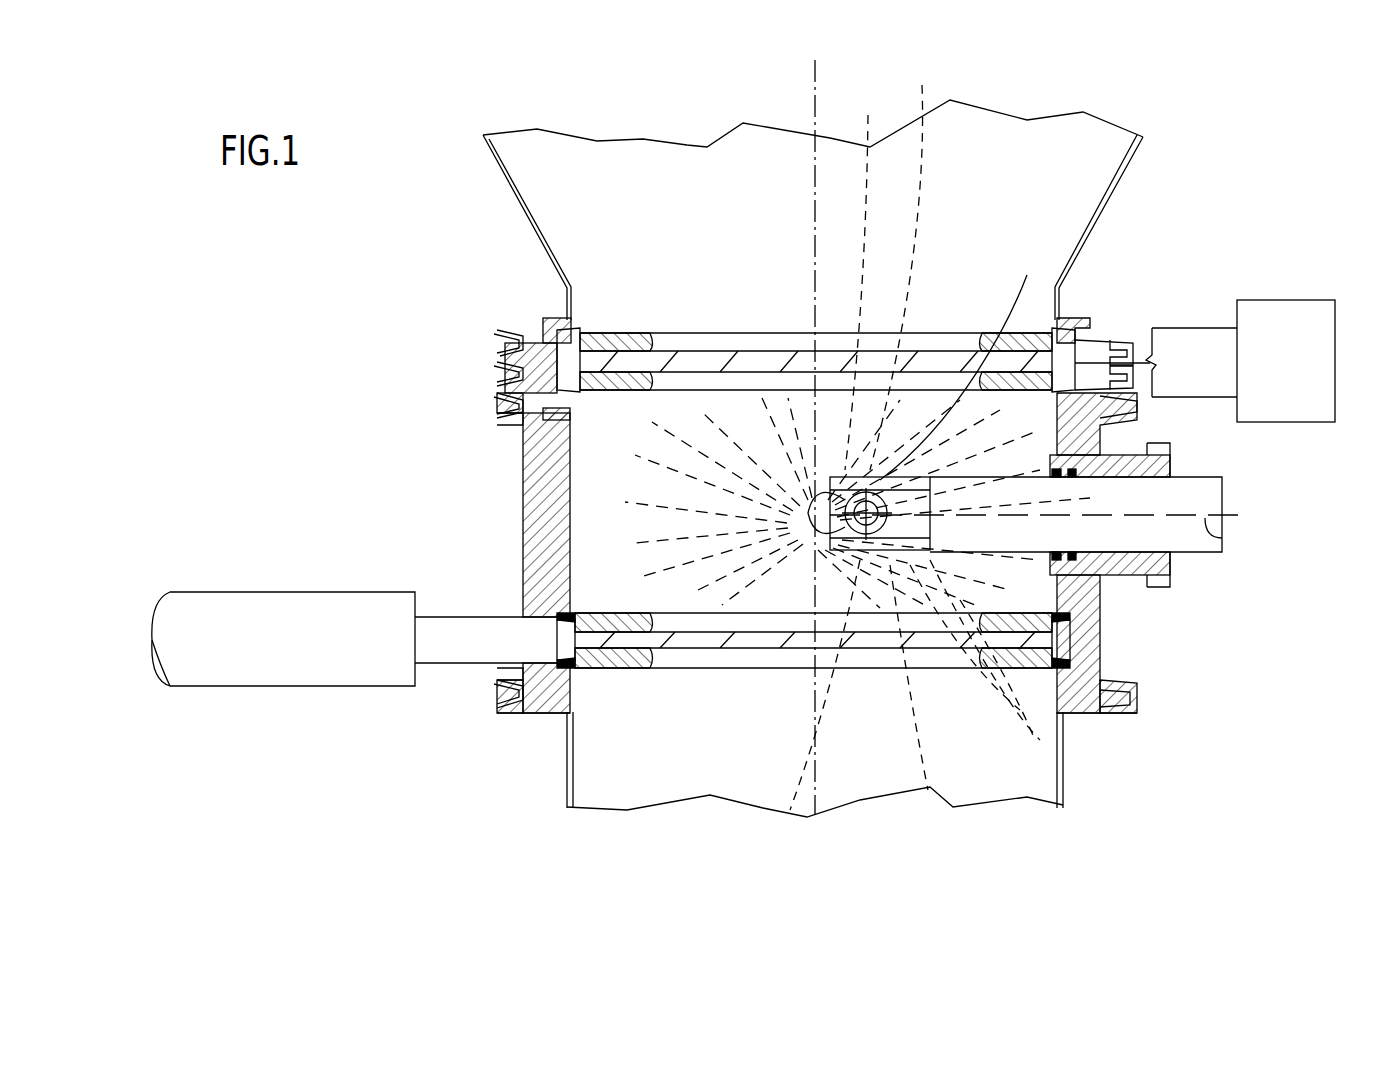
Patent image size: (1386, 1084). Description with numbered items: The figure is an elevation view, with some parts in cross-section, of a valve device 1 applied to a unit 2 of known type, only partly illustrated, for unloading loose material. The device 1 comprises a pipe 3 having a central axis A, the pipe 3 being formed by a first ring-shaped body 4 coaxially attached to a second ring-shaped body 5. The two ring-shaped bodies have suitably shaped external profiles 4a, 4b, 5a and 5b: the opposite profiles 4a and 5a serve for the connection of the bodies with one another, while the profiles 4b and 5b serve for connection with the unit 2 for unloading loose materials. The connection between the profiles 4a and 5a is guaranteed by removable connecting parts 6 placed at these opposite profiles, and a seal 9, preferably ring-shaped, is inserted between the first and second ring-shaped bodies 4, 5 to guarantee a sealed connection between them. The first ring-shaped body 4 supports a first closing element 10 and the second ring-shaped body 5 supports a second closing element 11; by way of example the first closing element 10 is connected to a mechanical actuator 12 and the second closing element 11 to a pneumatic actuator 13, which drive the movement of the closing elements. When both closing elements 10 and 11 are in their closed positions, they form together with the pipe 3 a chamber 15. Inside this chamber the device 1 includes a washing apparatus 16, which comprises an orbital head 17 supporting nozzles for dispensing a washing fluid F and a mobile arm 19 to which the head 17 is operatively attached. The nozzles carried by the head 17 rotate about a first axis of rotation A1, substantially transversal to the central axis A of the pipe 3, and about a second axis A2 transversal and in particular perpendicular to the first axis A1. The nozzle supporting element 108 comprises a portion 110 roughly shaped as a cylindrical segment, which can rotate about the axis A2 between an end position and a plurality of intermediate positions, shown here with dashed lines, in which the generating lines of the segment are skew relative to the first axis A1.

The valve device 1 is at (388, 448).
The unit 2 is at (607, 133).
The pipe 3 is at (722, 420).
The first ring-shaped body 4 is at (492, 385).
The external profile 4a is at (488, 405).
The external profile 4b is at (495, 383).
The second ring-shaped body 5 is at (520, 570).
The external profile 5a is at (510, 430).
The external profile 5b is at (500, 668).
The removable connecting parts 6 is at (485, 411).
The seal 9 is at (550, 430).
The first closing element 10 is at (787, 348).
The second closing element 11 is at (828, 650).
The mechanical actuator 12 is at (1182, 326).
The pneumatic actuator 13 is at (312, 665).
The chamber 15 is at (630, 488).
The washing apparatus 16 is at (1058, 326).
The orbital head 17 is at (1115, 712).
The mobile arm 19 is at (967, 670).
The nozzle supporting element 108 is at (1090, 798).
The portion 110 is at (935, 815).
The central axis A is at (815, 115).
The first axis of rotation A1 is at (1222, 545).
The second axis A2 is at (1035, 742).
The washing fluid F is at (763, 588).